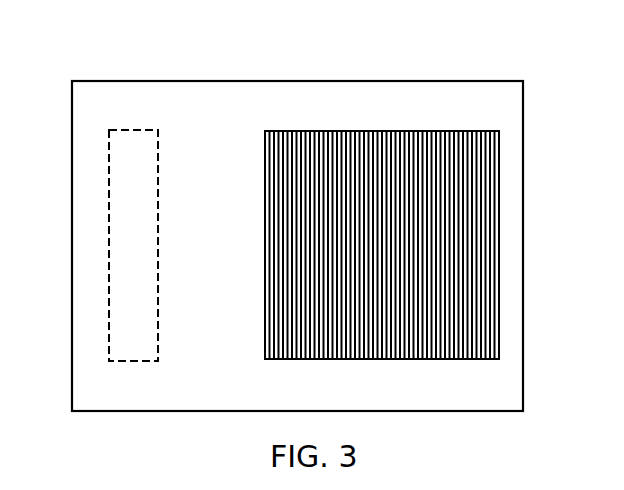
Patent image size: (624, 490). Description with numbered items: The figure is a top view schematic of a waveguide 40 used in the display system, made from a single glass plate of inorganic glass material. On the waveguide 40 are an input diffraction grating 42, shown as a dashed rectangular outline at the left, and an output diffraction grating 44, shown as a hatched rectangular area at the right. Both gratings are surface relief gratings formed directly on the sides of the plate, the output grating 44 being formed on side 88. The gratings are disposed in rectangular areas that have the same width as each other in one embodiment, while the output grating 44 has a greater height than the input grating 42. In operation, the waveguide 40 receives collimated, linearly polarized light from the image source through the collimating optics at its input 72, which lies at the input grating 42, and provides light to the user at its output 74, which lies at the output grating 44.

The substrate waveguide 40 is at (518, 100).
The input diffraction grating 42 is at (130, 142).
The output diffraction grating 44 is at (498, 171).
The input 72 is at (128, 203).
The output 74 is at (459, 152).
The side 88 is at (203, 395).